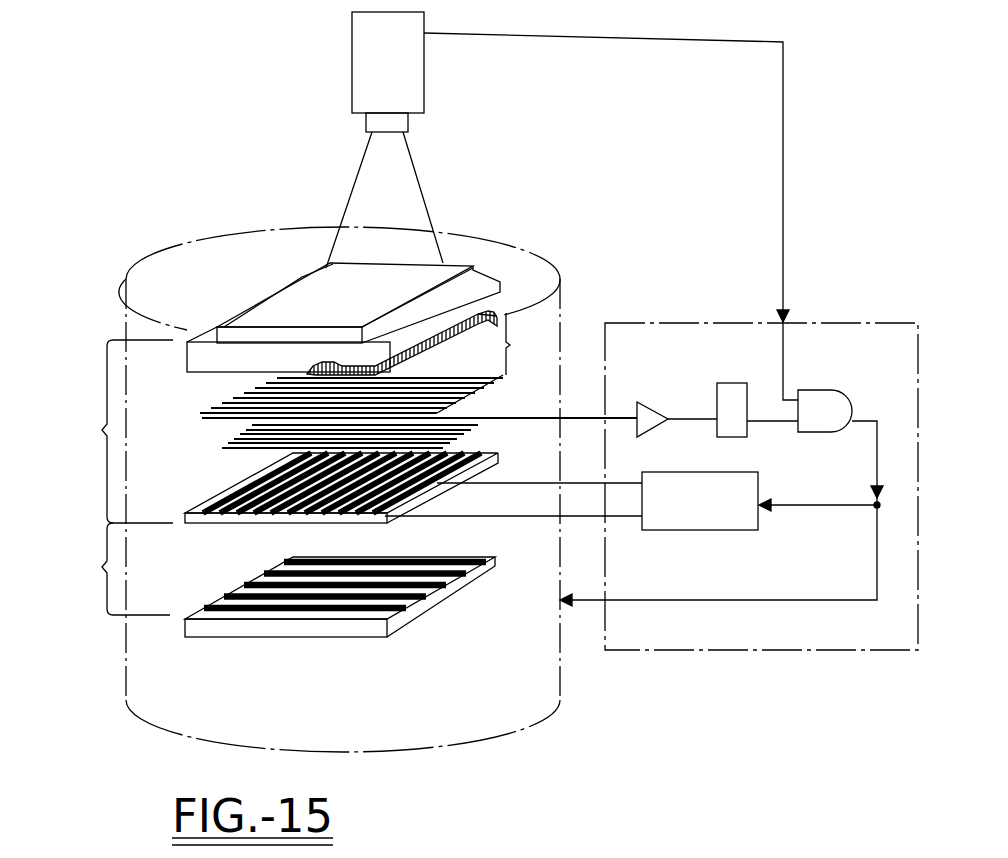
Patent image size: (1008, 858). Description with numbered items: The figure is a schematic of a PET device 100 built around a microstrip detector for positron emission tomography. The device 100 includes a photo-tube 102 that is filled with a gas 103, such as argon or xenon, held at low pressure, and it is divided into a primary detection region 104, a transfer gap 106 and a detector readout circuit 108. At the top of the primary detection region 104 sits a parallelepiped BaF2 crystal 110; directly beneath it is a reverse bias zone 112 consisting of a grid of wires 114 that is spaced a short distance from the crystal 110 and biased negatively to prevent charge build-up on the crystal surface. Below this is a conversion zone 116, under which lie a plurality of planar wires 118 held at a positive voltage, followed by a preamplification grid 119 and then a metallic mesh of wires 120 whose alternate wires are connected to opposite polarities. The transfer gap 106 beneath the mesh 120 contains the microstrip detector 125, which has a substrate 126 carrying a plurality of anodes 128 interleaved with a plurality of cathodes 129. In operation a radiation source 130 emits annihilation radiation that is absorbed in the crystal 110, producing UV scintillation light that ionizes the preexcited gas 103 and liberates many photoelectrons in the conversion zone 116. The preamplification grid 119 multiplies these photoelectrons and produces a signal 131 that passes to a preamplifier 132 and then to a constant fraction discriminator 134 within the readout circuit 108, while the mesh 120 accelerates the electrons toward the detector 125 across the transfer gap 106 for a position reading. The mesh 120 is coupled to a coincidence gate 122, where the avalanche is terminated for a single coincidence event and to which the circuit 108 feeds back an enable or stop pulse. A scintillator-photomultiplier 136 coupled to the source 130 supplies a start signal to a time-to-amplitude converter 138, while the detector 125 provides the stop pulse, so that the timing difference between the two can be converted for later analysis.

The PET device 100 is at (183, 205).
The photo-tube 102 is at (563, 696).
The gas 103 is at (463, 742).
The primary detection region 104 is at (113, 431).
The transfer gap 106 is at (111, 569).
The detector readout circuit 108 is at (688, 322).
The BaF2 crystal 110 is at (187, 339).
The reverse bias zone 112 is at (502, 306).
The grid of wires 114 is at (480, 323).
The conversion zone 116 is at (528, 344).
The planar wires 118 is at (480, 400).
The preamplification grid 119 is at (240, 452).
The metallic mesh of wires 120 is at (276, 524).
The coincidence gate 122 is at (714, 532).
The microstrip detector 125 is at (206, 662).
The substrate 126 is at (335, 637).
The anodes 128 is at (412, 637).
The cathodes 129 is at (410, 605).
The radiation source 130 is at (442, 262).
The signal 131 is at (530, 420).
The preamplifier 132 is at (640, 402).
The constant fraction discriminator 134 is at (733, 383).
The scintillator-photomultiplier 136 is at (352, 33).
The time-to-amplitude converter 138 is at (828, 390).